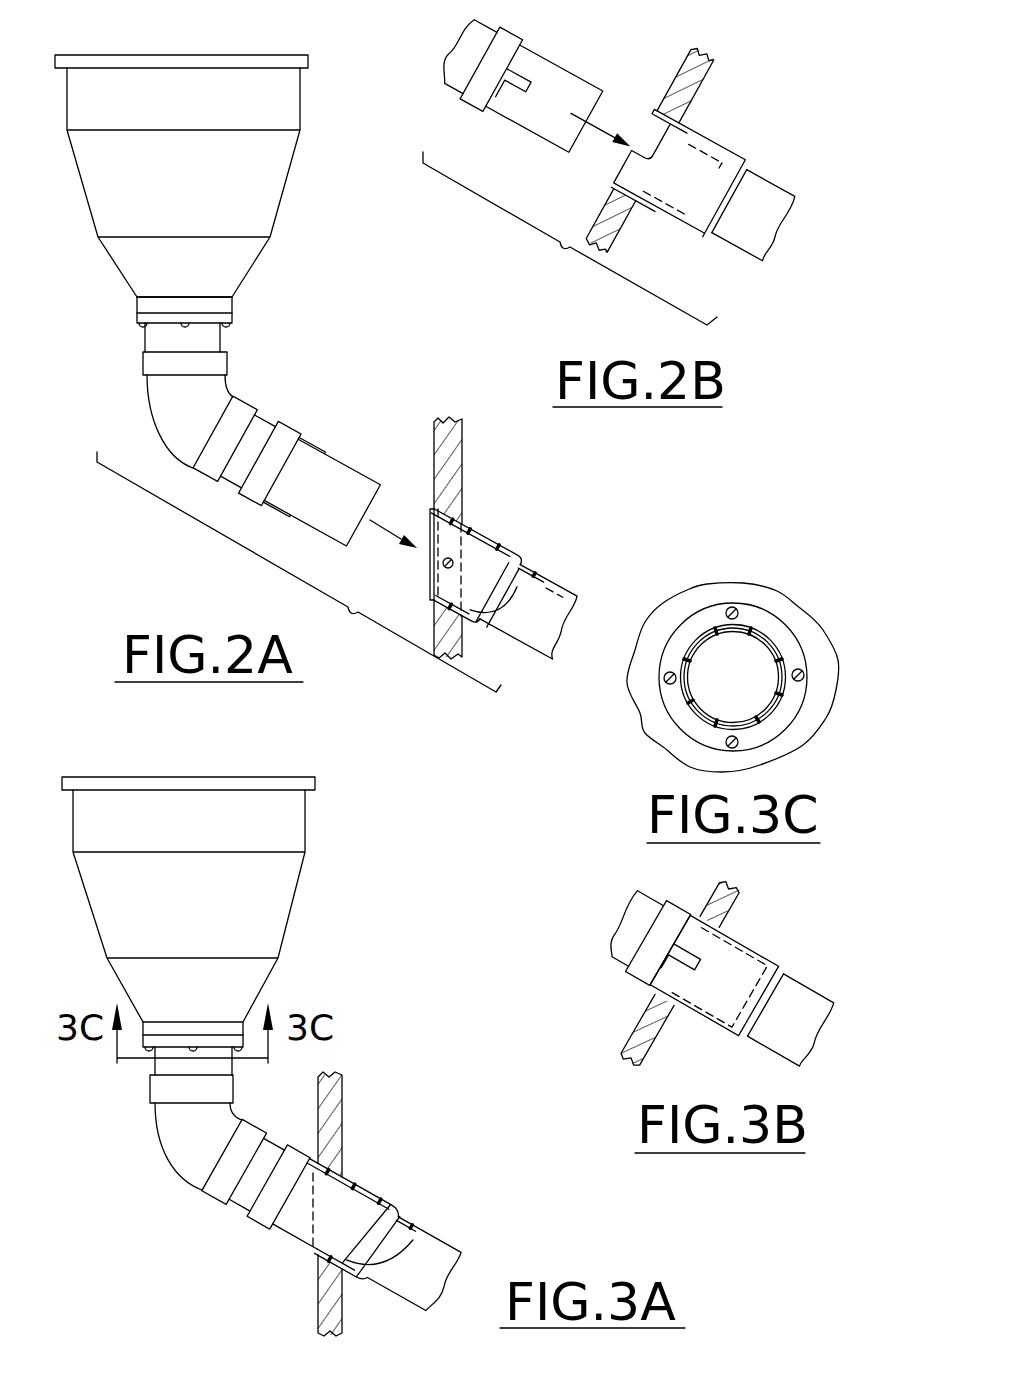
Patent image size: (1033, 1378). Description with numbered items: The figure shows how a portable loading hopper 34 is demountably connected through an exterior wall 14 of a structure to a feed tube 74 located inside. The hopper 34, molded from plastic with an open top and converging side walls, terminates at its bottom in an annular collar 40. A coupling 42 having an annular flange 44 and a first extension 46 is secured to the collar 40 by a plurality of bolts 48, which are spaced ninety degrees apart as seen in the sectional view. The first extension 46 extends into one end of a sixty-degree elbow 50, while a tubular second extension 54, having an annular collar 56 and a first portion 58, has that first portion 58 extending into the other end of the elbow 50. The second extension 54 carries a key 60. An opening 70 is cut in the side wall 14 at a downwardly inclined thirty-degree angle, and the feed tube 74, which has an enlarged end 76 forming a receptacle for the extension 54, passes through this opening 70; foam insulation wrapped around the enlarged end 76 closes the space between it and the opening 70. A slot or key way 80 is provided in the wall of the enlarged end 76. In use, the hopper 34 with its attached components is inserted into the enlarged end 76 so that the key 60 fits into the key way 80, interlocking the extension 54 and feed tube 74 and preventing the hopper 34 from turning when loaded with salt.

In FIG. 2A, the exterior wall 14 is at (462, 433).
In FIG. 3B, the exterior wall 14 is at (643, 1015).
In FIG. 3A, the exterior wall 14 is at (342, 1092).
In FIG. 2A, the portable loading hopper 34 is at (320, 203).
In FIG. 3A, the portable loading hopper 34 is at (340, 841).
In FIG. 2A, the annular collar 40 is at (230, 303).
In FIG. 2A, the coupling 42 is at (238, 338).
In FIG. 2A, the annular flange 44 is at (137, 317).
In FIG. 3C, the annular flange 44 is at (773, 627).
In FIG. 2A, the first extension 46 is at (145, 340).
In FIG. 2A, the bolts 48 is at (235, 328).
In FIG. 3C, the bolts 48 is at (807, 670).
In FIG. 2A, the elbow 50 is at (158, 410).
In FIG. 3A, the elbow 50 is at (178, 1147).
In FIG. 2A, the tubular second extension 54 is at (343, 462).
In FIG. 2B, the tubular second extension 54 is at (552, 137).
In FIG. 3C, the tubular second extension 54 is at (733, 588).
In FIG. 3B, the tubular second extension 54 is at (620, 948).
In FIG. 2A, the annular collar 56 is at (290, 422).
In FIG. 2B, the annular collar 56 is at (475, 112).
In FIG. 2A, the first portion 58 is at (233, 477).
In FIG. 2A, the key 60 is at (310, 438).
In FIG. 2B, the key 60 is at (502, 120).
In FIG. 3A, the key 60 is at (338, 1150).
In FIG. 2A, the opening 70 is at (462, 513).
In FIG. 2A, the feed tube 74 is at (547, 592).
In FIG. 3B, the feed tube 74 is at (815, 995).
In FIG. 2A, the enlarged end 76 is at (487, 538).
In FIG. 3B, the enlarged end 76 is at (750, 943).
In FIG. 2A, the slot or key way 80 is at (432, 510).
In FIG. 2B, the slot or key way 80 is at (655, 158).